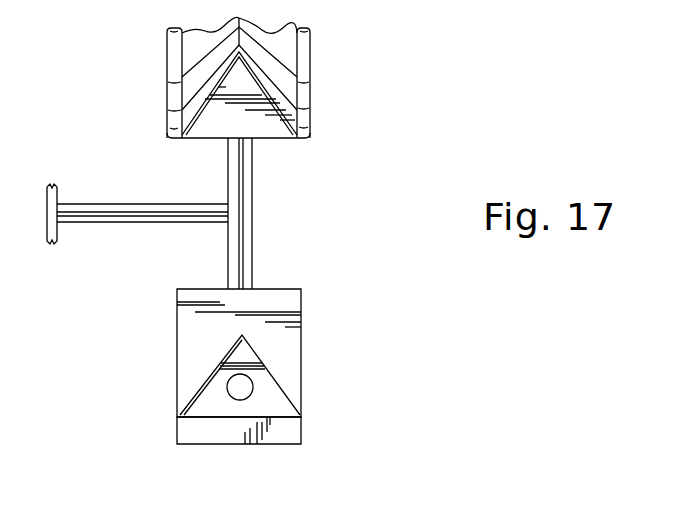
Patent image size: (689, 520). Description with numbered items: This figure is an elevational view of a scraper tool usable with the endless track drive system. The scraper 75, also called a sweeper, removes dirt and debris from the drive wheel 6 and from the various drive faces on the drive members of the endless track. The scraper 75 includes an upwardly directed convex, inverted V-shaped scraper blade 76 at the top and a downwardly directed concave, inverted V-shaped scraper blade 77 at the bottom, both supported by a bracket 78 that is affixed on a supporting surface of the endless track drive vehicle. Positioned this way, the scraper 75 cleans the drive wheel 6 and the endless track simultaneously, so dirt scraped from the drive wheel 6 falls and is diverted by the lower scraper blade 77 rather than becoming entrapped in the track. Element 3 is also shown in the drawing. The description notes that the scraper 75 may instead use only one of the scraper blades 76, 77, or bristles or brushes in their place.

The upper holder 6 is at (300, 79).
The upper die insert 76 is at (275, 128).
The connecting rod 75 is at (257, 237).
The lateral arm 78 is at (137, 213).
The lower die 77 is at (290, 352).
The base 3 is at (301, 416).